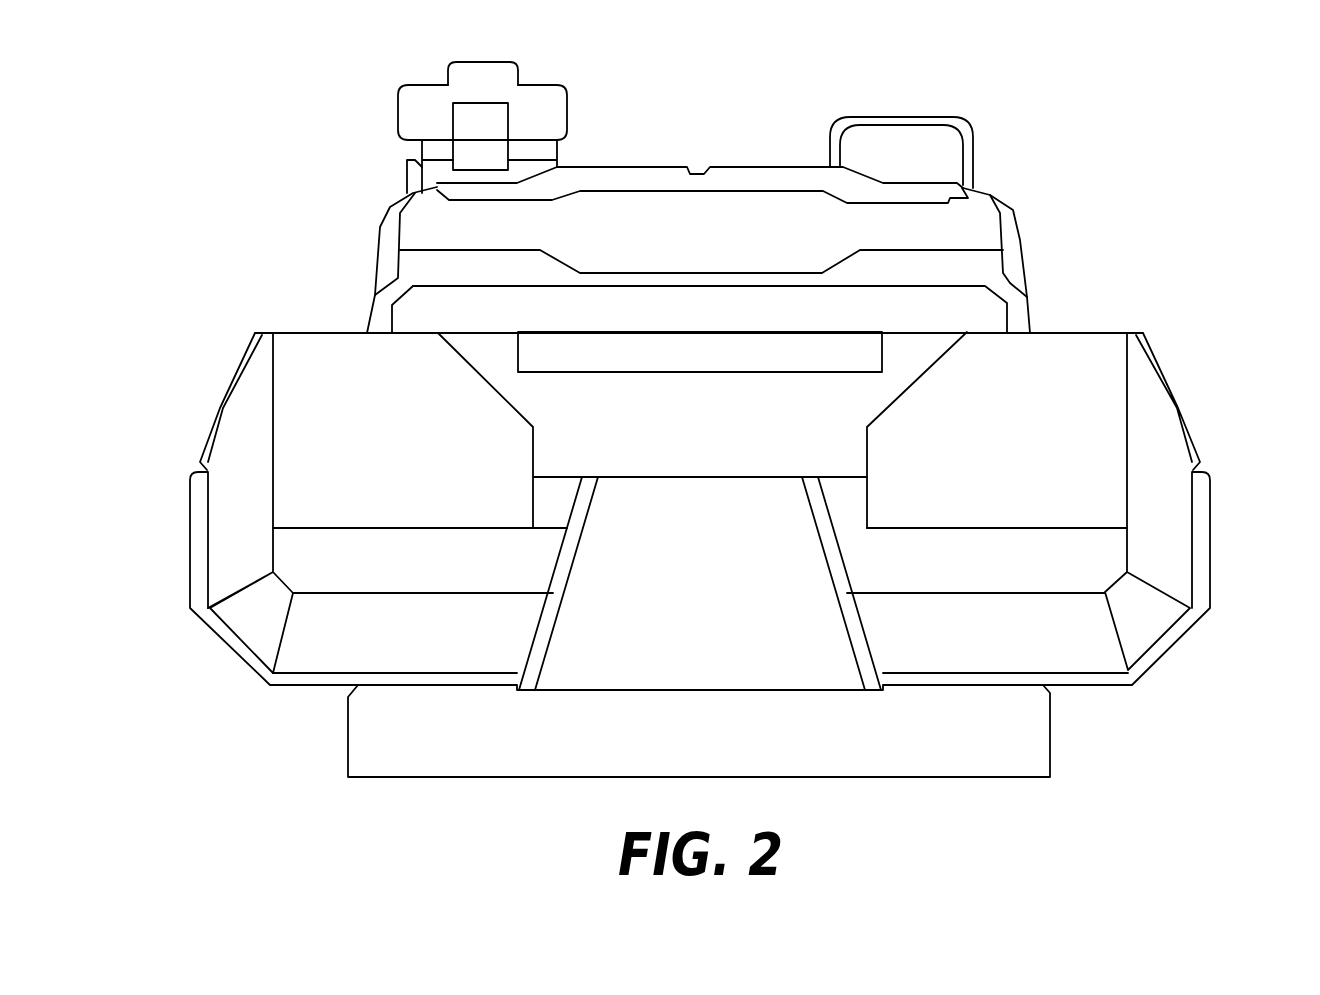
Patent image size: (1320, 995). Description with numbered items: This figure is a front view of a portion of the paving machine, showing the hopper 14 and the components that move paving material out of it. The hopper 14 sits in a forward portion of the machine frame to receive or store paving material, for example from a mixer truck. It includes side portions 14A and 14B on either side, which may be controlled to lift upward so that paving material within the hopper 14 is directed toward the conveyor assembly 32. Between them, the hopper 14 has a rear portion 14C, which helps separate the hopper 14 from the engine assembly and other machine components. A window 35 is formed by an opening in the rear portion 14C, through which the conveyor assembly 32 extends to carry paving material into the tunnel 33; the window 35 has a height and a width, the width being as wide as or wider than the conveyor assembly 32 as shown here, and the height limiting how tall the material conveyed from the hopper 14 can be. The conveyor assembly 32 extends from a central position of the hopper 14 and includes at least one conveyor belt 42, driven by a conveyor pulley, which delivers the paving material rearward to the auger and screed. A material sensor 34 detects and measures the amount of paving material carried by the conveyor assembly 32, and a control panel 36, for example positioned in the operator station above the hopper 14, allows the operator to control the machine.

The hopper 14 is at (1160, 648).
The side portion 14A is at (1177, 385).
The side portion 14B is at (222, 410).
The rear portion 14C is at (1050, 367).
The conveyor assembly 32 is at (698, 656).
The tunnel 33 is at (767, 508).
The material sensor 34 is at (862, 333).
The window 35 is at (533, 500).
The control panel 36 is at (500, 110).
The conveyor belt 42 is at (802, 677).